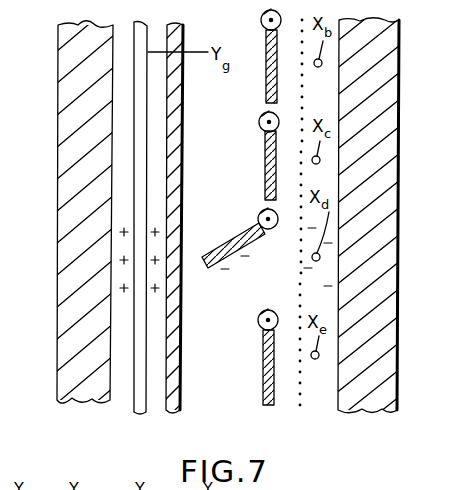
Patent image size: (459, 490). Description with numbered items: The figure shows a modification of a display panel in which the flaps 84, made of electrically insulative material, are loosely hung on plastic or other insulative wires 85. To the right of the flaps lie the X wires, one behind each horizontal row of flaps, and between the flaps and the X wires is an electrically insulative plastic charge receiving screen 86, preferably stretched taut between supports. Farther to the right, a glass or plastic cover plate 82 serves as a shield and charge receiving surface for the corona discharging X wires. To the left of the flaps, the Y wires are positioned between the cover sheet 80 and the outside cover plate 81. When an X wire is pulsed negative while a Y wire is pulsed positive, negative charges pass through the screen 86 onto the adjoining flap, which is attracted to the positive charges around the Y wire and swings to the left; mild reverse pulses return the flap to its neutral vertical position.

The cover sheet 80 is at (183, 93).
The outside cover plate 81 is at (59, 63).
The cover plate 82 is at (400, 93).
The flaps 84 is at (262, 78).
The insulative wires 85 is at (262, 22).
The charge receiving screen 86 is at (301, 413).